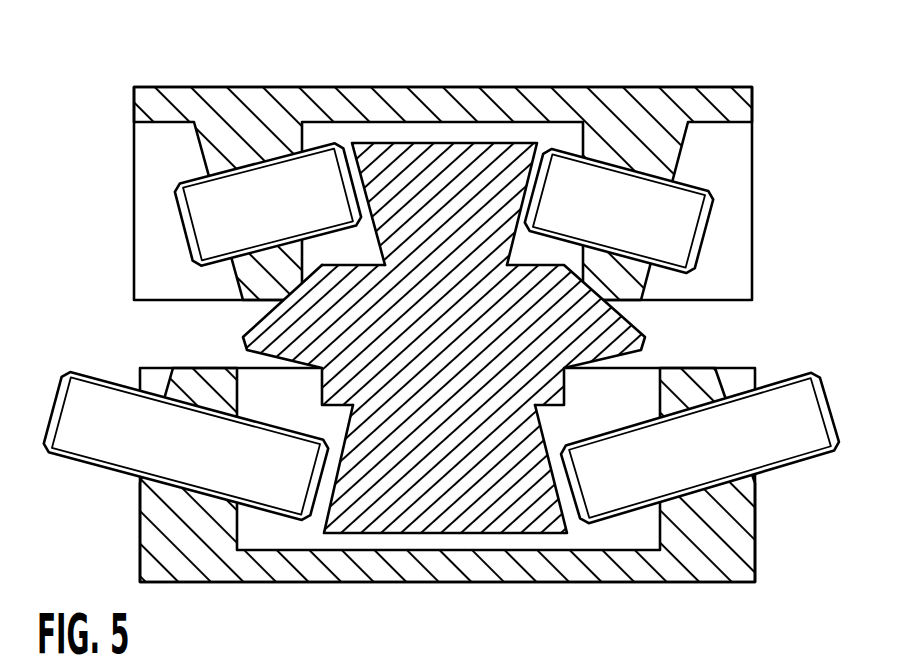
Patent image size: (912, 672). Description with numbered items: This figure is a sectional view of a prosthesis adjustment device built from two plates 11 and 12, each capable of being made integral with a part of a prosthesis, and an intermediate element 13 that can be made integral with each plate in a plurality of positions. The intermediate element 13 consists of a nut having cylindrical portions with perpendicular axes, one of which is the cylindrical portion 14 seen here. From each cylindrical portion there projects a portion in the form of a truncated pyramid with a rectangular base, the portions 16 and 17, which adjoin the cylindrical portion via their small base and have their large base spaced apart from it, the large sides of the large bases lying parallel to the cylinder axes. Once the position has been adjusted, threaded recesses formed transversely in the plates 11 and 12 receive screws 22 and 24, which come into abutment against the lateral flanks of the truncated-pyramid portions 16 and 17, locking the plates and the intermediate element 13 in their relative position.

The plate 11 is at (618, 86).
The plate 12 is at (527, 592).
The intermediate element 13 is at (583, 325).
The cylindrical portion 14 is at (246, 317).
The portion in the form of a truncated pyramid 16 is at (446, 152).
The portion in the form of a truncated pyramid 17 is at (382, 502).
The screw 22 is at (203, 228).
The screw 24 is at (107, 420).